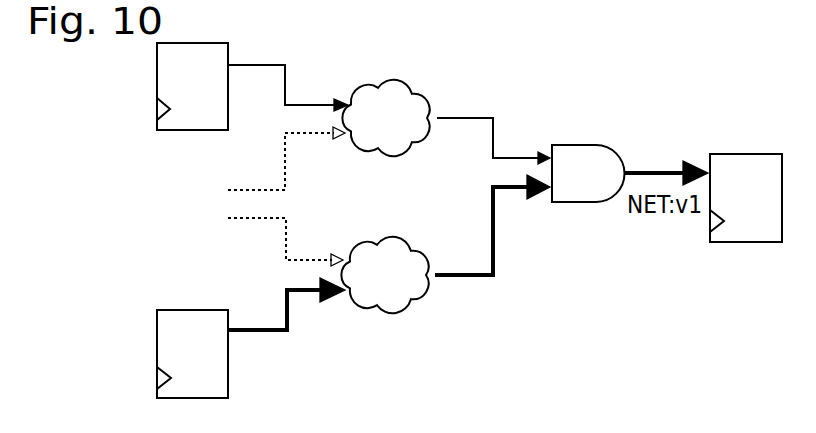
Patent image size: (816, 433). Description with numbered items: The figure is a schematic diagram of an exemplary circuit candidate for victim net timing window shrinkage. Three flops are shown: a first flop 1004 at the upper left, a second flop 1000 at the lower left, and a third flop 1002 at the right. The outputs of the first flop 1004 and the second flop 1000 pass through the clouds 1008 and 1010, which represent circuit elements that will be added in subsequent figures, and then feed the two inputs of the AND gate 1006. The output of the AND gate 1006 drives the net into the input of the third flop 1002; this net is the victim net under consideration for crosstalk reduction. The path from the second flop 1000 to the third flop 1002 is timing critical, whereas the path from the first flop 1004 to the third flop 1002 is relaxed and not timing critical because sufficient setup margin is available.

The flop FF2 1000 is at (229, 385).
The flop FF3 1002 is at (745, 243).
The flop FF1 1004 is at (193, 132).
The AND gate 1006 is at (588, 143).
The cloud 1008 is at (414, 131).
The cloud 1010 is at (414, 285).